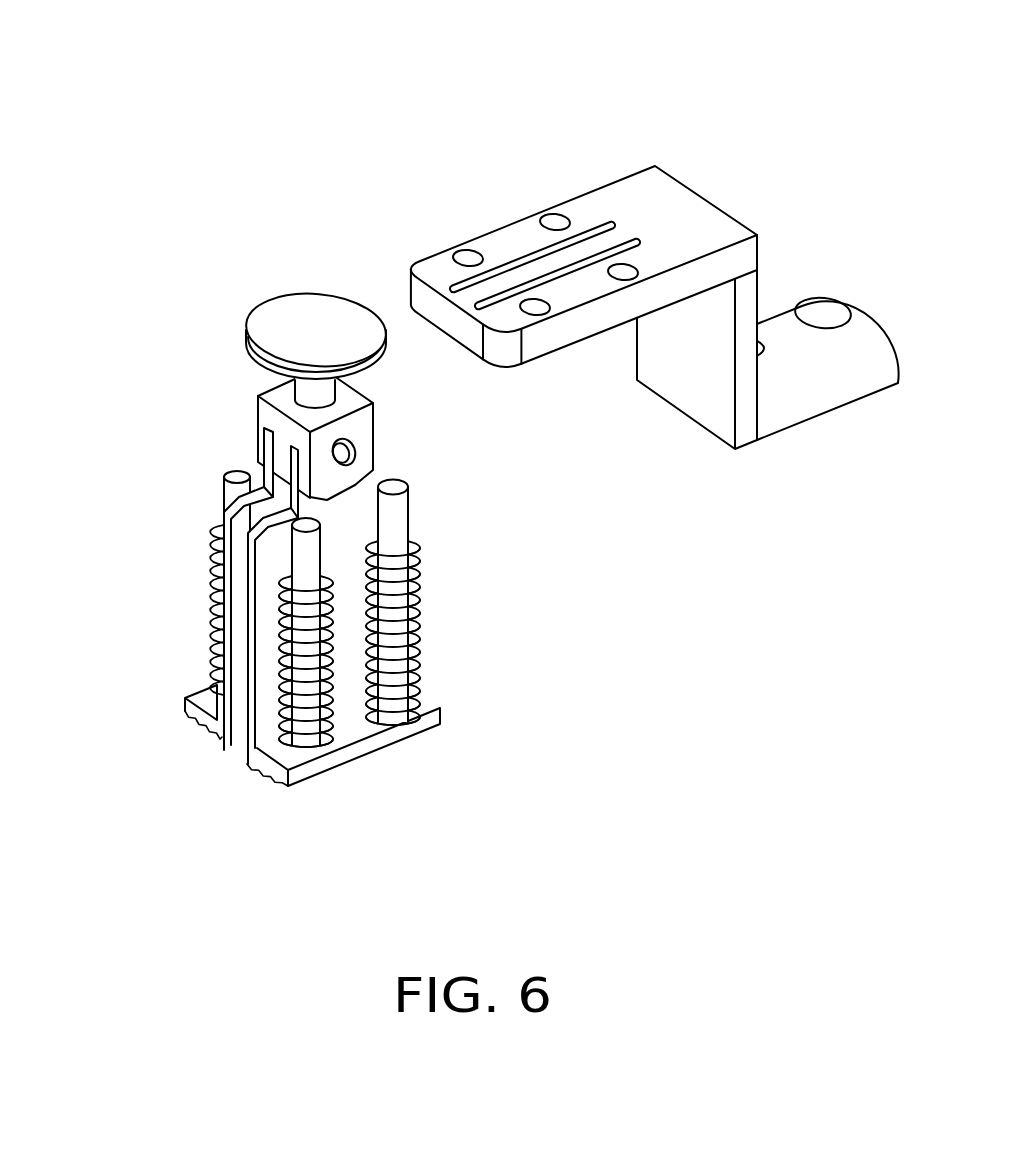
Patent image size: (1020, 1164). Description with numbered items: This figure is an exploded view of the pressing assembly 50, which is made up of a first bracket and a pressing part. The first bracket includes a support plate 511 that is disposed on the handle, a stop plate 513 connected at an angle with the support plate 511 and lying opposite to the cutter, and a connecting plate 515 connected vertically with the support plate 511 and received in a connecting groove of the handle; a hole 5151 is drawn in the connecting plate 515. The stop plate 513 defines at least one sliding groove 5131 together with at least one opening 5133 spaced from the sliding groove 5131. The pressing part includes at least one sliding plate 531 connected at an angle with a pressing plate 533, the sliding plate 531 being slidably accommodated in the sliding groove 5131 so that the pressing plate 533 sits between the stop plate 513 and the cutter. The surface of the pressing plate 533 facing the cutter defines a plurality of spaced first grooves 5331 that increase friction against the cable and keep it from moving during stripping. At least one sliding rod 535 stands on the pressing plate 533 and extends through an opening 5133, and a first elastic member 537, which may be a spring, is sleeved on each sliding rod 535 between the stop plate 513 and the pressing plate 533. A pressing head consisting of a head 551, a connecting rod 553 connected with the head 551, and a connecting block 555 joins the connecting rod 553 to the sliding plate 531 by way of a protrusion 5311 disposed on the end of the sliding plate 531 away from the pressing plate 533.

The pressing assembly 50 is at (385, 34).
The support plate 511 is at (683, 377).
The stop plate 513 is at (670, 217).
The sliding groove 5131 is at (578, 224).
The opening 5133 is at (480, 241).
The connecting plate 515 is at (807, 388).
The fixing hole 5151 is at (828, 305).
The sliding plate 531 is at (228, 615).
The protrusion 5311 is at (258, 468).
The pressing plate 533 is at (197, 716).
The first grooves 5331 is at (214, 751).
The sliding rod 535 is at (300, 540).
The first elastic member 537 is at (293, 695).
The head 551 is at (300, 325).
The connecting rod 553 is at (310, 400).
The connecting block 555 is at (282, 434).